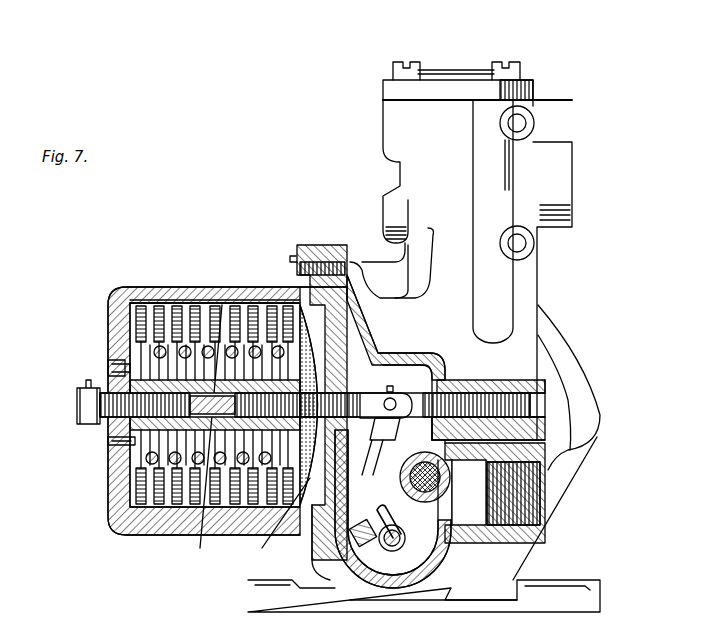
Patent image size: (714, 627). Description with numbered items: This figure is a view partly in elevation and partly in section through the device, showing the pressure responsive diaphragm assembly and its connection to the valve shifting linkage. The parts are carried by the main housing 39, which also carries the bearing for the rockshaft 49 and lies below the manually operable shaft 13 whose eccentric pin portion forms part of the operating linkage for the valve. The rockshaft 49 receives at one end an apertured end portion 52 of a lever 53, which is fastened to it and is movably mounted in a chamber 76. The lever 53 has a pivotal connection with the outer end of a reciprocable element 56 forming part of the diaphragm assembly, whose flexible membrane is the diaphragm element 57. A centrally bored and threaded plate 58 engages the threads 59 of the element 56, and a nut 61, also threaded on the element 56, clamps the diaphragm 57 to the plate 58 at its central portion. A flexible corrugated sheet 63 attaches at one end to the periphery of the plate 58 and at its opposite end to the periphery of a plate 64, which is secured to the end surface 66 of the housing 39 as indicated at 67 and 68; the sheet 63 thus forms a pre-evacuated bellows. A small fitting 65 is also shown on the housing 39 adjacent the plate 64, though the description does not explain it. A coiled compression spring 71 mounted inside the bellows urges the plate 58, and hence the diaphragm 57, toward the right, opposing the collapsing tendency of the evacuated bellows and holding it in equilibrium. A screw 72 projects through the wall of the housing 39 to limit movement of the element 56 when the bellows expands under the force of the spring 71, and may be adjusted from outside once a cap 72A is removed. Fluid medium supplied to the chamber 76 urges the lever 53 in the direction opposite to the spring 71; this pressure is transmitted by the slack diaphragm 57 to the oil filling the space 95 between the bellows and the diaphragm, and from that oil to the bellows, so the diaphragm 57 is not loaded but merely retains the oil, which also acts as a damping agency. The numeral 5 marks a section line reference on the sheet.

The section line 5 is at (453, 345).
The manually operable shaft 13 is at (472, 491).
The main housing 39 is at (118, 533).
The rockshaft 49 is at (403, 509).
The apertured end portion 52 is at (432, 548).
The lever 53 is at (398, 440).
The reciprocable element 56 is at (386, 397).
The diaphragm element 57 is at (318, 330).
The threaded plate 58 is at (308, 388).
The threads 59 is at (300, 420).
The nut 61 is at (335, 398).
The flexible corrugated sheet 63 is at (214, 432).
The plate 64 is at (130, 490).
The plug 65 is at (108, 366).
The end surface 66 is at (112, 456).
The securing means 67 is at (108, 442).
The securing means 68 is at (78, 408).
The coiled compression spring 71 is at (183, 330).
The screw 72 is at (456, 390).
The cap 72A is at (540, 378).
The chamber 76 is at (352, 472).
The space 95 is at (287, 435).